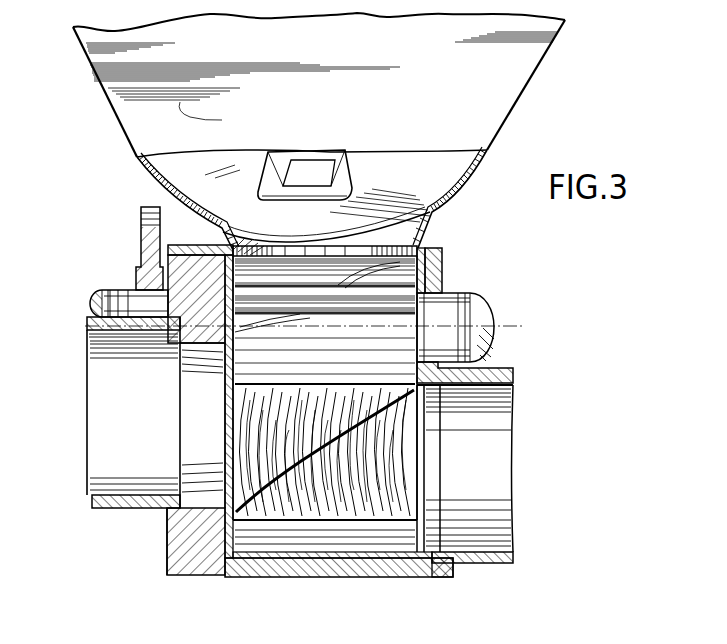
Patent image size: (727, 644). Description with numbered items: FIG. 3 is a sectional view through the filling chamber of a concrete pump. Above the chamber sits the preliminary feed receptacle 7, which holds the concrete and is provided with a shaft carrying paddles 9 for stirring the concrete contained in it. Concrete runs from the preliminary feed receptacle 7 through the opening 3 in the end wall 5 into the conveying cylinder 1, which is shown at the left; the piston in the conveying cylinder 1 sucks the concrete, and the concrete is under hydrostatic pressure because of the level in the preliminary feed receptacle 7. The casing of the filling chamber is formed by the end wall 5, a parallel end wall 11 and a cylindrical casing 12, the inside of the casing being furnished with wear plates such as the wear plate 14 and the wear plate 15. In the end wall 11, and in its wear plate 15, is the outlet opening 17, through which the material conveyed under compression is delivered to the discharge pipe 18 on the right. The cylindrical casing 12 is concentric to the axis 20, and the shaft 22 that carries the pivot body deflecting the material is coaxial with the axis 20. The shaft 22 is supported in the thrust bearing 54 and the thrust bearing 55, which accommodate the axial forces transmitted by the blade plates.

The preliminary feed receptacle 7 is at (100, 82).
The paddles 9 is at (355, 188).
The thrust bearing 54 is at (120, 296).
The conveying cylinder 1 is at (133, 492).
The opening 3 is at (222, 440).
The wear plate 14 is at (218, 556).
The end wall 5 is at (180, 528).
The wear plate 15 is at (437, 249).
The shaft 22 is at (419, 326).
The cylindrical casing 12 is at (355, 568).
The end wall 11 is at (445, 276).
The thrust bearing 55 is at (468, 318).
The axis 20 is at (523, 333).
The outlet opening 17 is at (430, 462).
The discharge pipe 18 is at (492, 560).